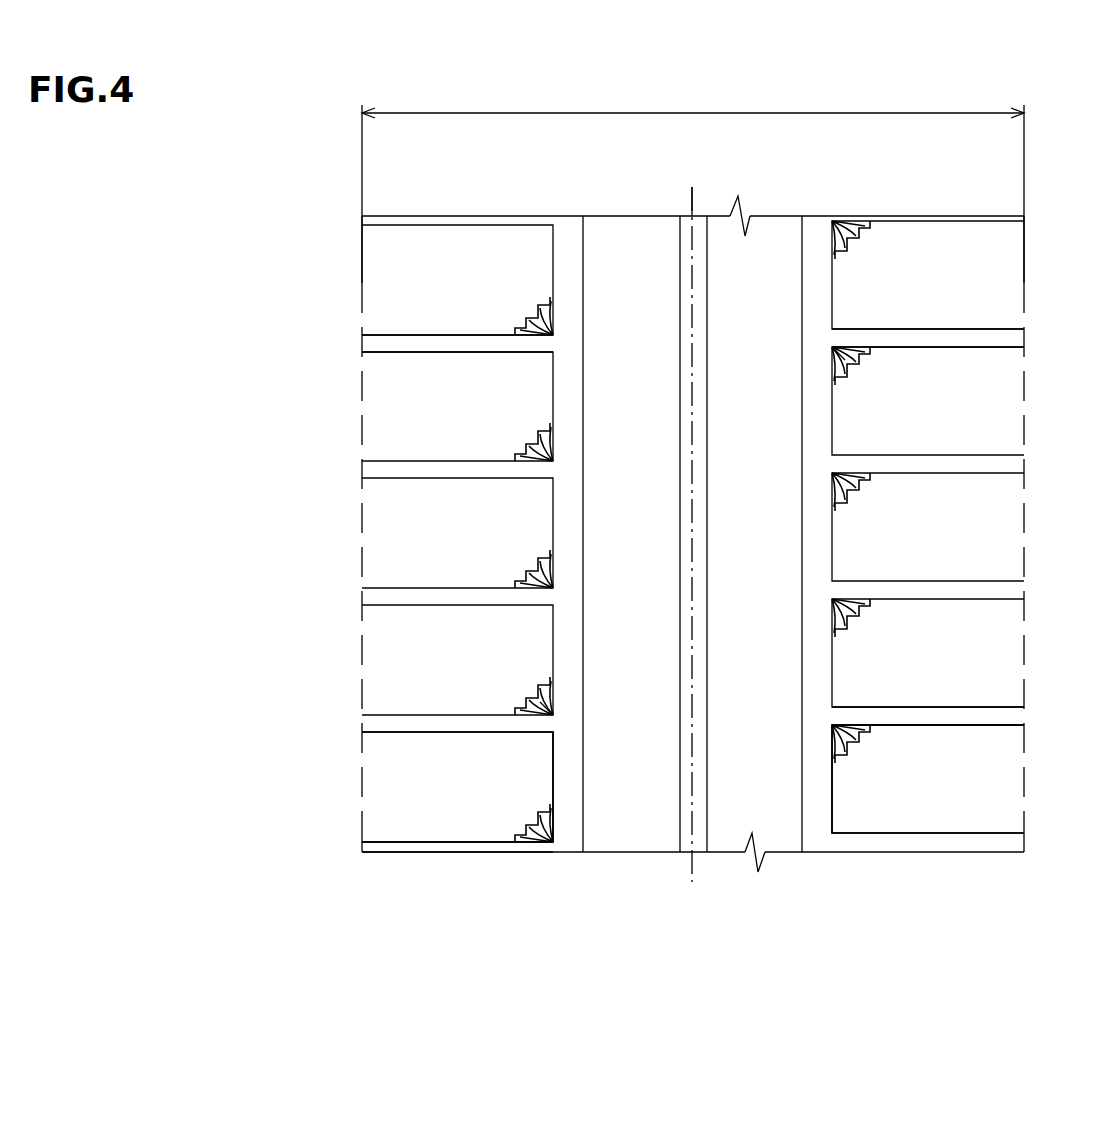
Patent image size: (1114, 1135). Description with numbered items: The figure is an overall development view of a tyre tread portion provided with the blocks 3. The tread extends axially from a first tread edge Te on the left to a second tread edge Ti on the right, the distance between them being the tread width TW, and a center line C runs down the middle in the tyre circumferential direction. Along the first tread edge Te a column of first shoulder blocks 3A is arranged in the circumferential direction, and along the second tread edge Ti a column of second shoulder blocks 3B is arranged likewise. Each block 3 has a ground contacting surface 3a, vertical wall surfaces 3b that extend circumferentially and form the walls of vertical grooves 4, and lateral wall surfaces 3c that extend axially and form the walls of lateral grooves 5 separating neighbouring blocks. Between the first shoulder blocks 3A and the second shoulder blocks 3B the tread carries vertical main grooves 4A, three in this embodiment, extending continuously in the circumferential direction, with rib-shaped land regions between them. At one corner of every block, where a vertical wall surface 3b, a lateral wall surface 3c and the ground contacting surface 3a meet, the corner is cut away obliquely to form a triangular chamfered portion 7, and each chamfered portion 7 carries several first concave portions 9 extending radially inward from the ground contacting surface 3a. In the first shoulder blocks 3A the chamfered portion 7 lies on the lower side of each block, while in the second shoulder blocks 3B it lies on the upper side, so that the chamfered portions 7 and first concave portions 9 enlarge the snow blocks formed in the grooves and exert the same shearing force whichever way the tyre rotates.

The block 3 is at (411, 207).
The first shoulder block 3A is at (457, 262).
The second shoulder block 3B is at (937, 267).
The ground contacting surface 3a is at (422, 795).
The vertical wall surface 3b is at (553, 768).
The lateral wall surface 3c is at (453, 846).
The vertical groove 4 is at (545, 212).
The vertical main groove 4A is at (568, 255).
The lateral groove 5 is at (423, 343).
The chamfered portion 7 is at (545, 585).
The first concave portion 9 is at (545, 710).
The tread width TW is at (693, 148).
The tyre equator C is at (692, 187).
The first tread edge Te is at (360, 247).
The second tread edge Ti is at (1025, 247).